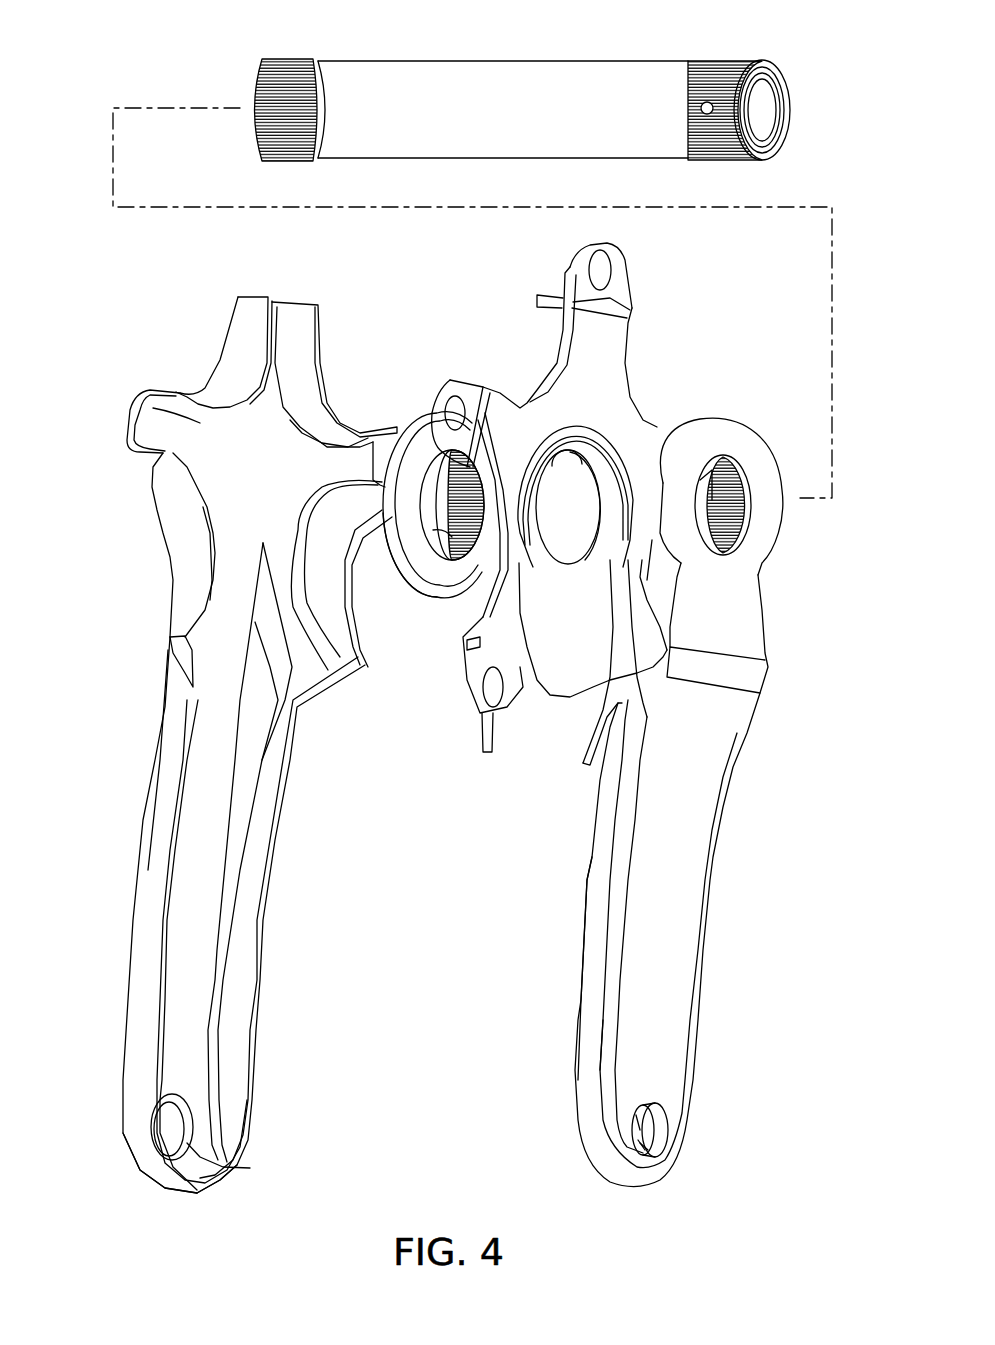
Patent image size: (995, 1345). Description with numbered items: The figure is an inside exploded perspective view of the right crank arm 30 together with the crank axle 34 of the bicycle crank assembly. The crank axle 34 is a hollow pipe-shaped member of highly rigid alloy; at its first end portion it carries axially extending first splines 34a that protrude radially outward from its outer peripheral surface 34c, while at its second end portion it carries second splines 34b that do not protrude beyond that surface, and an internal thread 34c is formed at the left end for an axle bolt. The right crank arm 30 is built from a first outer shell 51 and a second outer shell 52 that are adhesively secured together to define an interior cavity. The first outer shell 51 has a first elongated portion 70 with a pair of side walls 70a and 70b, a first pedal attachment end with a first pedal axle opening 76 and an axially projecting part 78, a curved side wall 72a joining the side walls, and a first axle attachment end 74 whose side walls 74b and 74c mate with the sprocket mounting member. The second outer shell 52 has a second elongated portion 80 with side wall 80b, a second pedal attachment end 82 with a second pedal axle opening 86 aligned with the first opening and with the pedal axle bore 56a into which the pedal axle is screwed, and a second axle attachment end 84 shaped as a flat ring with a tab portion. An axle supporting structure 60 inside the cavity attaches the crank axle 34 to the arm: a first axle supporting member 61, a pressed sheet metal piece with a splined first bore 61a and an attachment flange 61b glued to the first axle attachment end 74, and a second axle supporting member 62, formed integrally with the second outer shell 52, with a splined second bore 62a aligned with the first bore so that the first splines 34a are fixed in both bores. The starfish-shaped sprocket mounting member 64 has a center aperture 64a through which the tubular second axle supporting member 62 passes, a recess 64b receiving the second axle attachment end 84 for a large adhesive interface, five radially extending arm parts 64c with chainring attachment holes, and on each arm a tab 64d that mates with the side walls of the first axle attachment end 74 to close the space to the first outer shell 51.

The right crank arm 30 is at (155, 312).
The crank axle 34 is at (541, 80).
The first splines 34a is at (300, 58).
The second splines 34b is at (735, 60).
The outer peripheral surface / internal thread 34c is at (410, 60).
The first outer shell 51 is at (228, 767).
The second outer shell 52 is at (674, 800).
The pedal axle bore 56a is at (643, 1143).
The axle supporting structure 60 is at (417, 521).
The first axle supporting member 61 is at (417, 495).
The first bore 61a is at (453, 585).
The attachment flange 61b is at (403, 540).
The second axle supporting member 62 is at (743, 543).
The second bore 62a is at (748, 532).
The sprocket mounting member 64 is at (560, 502).
The center aperture 64a is at (580, 457).
The recess 64b is at (568, 688).
The arm parts 64c is at (578, 262).
The tab 64d is at (548, 295).
The first elongated portion 70 is at (190, 1025).
The side wall 70a is at (262, 960).
The side wall 70b is at (143, 995).
The curved side wall 72a is at (200, 1196).
The first axle attachment end 74 is at (252, 483).
The side wall 74b is at (322, 378).
The side wall 74c is at (233, 395).
The first pedal axle opening 76 is at (200, 1147).
The projecting part 78 is at (190, 1115).
The second elongated portion 80 is at (648, 937).
The side wall 80b is at (590, 970).
The second pedal attachment end 82 is at (623, 1108).
The second axle attachment end 84 is at (752, 450).
The second pedal axle opening 86 is at (660, 1120).